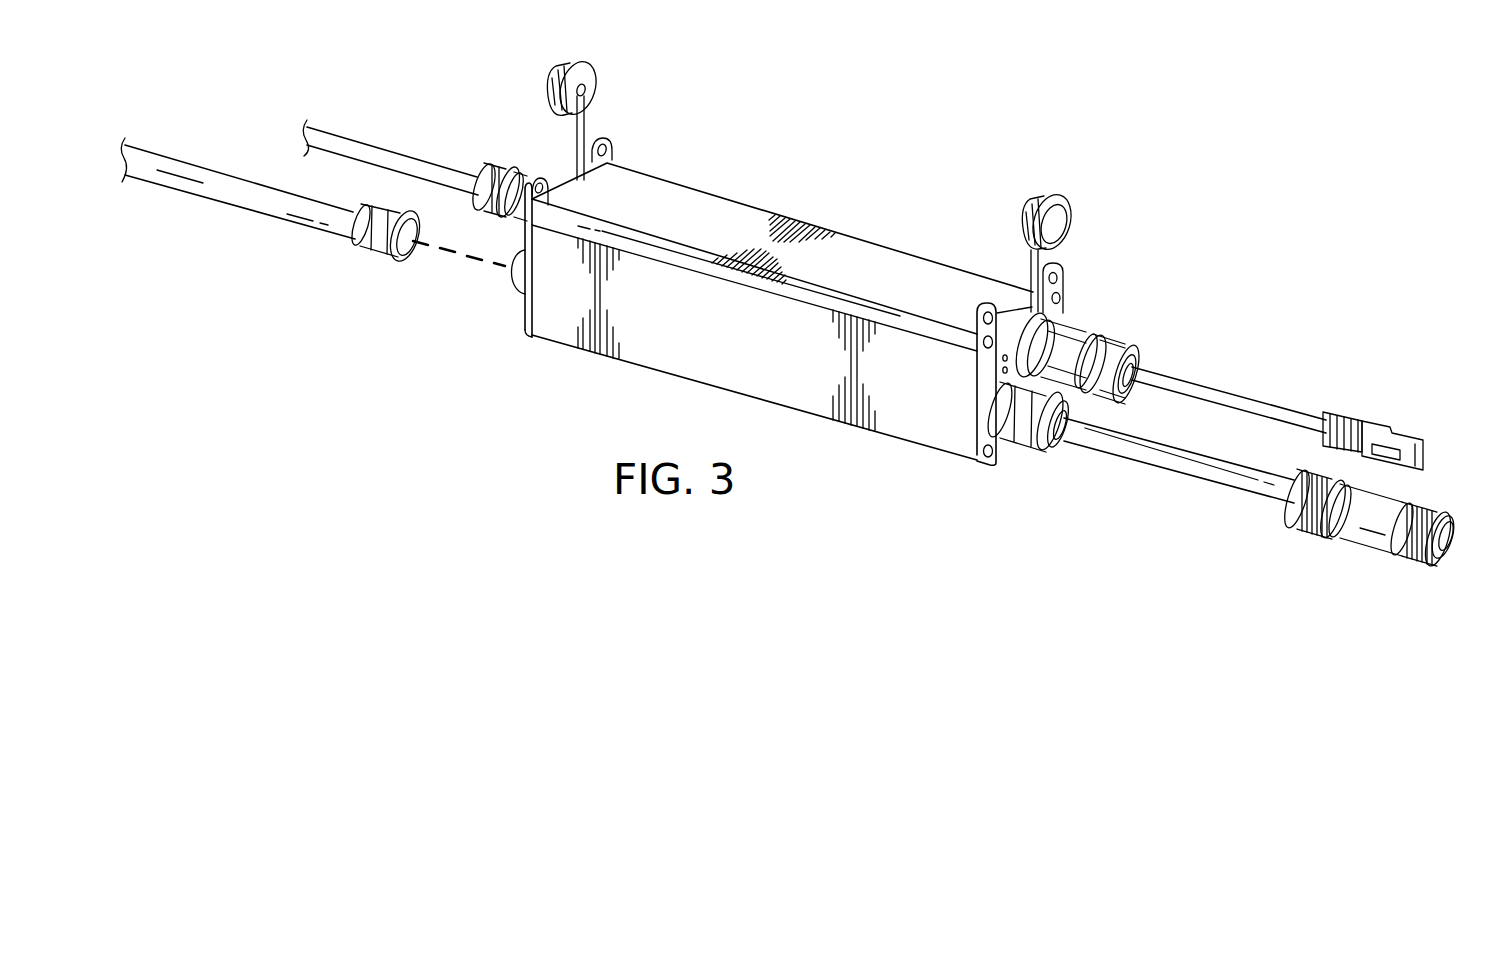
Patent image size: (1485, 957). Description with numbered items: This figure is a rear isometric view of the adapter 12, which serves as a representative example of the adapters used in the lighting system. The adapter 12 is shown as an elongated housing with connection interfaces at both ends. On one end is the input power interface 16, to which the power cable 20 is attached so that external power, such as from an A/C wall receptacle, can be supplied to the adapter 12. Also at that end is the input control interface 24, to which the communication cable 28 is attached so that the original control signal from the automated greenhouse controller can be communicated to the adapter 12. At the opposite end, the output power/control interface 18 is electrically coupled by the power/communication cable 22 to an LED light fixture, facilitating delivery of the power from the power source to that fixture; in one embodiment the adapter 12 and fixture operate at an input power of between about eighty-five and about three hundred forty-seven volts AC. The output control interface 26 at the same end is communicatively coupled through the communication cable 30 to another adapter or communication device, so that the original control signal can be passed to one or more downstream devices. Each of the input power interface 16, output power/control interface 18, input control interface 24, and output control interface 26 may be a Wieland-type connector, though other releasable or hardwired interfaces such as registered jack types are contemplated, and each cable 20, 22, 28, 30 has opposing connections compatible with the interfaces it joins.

The adapter 12 is at (728, 192).
The input power interface 16 is at (513, 287).
The output power/control interface 18 is at (1003, 450).
The power cable 20 is at (249, 210).
The power/communication cable 22 is at (1168, 470).
The input control interface 24 is at (558, 176).
The output control interface 26 is at (1062, 312).
The communication cable 28 is at (397, 151).
The communication cable 30 is at (1198, 377).